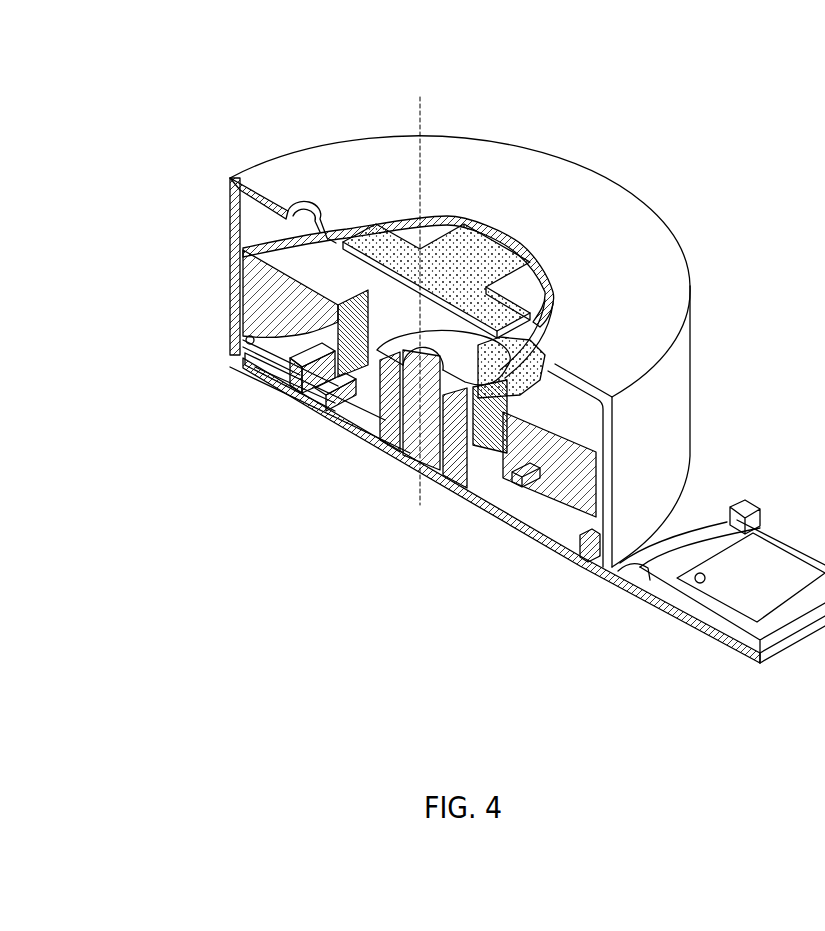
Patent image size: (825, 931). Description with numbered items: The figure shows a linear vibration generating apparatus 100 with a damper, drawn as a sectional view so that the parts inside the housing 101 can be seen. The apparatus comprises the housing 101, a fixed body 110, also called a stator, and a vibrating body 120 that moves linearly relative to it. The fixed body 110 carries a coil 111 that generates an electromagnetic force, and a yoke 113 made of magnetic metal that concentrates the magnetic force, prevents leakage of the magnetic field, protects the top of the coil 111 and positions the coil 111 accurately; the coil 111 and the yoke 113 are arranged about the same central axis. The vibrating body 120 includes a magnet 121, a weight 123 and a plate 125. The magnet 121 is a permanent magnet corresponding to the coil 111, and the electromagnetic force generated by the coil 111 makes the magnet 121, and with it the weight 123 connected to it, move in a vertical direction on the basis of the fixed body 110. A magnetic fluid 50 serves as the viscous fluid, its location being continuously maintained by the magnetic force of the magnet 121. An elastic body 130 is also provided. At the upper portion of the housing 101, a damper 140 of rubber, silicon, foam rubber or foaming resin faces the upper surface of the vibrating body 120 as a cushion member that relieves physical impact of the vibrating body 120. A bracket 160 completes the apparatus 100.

The linear vibration generating apparatus 100 is at (357, 110).
The housing 101 is at (614, 213).
The fixed body 110 is at (412, 553).
The coil 111 is at (433, 471).
The yoke 113 is at (398, 456).
The vibrating body 120 is at (150, 312).
The magnet 121 is at (250, 358).
The weight 123 is at (250, 308).
The plate 125 is at (256, 380).
The elastic body 130 is at (275, 362).
The damper 140 is at (472, 250).
The bracket 160 is at (536, 508).
The magnetic fluid 50 is at (515, 372).